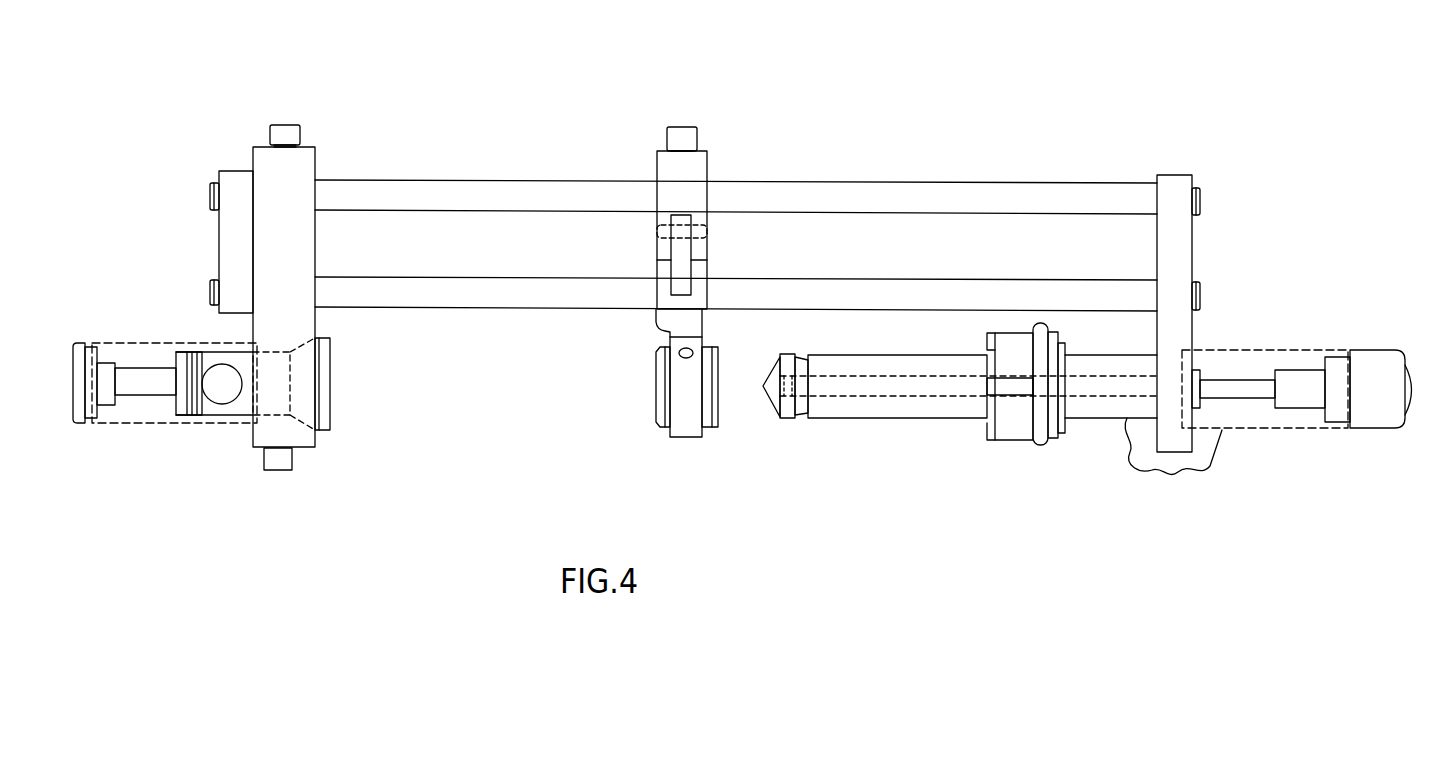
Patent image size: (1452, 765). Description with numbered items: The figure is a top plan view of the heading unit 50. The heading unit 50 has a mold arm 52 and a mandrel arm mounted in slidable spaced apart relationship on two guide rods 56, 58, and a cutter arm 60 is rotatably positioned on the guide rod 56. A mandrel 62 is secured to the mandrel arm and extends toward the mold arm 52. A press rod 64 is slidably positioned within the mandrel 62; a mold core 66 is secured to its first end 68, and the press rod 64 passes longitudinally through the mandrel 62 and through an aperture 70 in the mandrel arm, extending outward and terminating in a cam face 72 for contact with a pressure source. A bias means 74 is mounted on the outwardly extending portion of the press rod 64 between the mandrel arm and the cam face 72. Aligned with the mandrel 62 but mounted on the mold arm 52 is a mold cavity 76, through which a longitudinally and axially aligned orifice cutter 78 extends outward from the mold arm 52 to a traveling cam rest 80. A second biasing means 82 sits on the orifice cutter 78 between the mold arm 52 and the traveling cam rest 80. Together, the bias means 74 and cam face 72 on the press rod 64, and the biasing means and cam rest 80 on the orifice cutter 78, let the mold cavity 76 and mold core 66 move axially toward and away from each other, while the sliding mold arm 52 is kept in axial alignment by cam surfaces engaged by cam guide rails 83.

The heading unit 50 is at (495, 136).
The mold arm 52 is at (258, 160).
The guide rod 56 is at (385, 192).
The guide rod 58 is at (415, 296).
The cutter arm 60 is at (697, 170).
The mandrel 62 is at (947, 413).
The press rod 64 is at (872, 388).
The mold core 66 is at (775, 397).
The first end 68 is at (790, 398).
The aperture 70 is at (1192, 372).
The cam face 72 is at (1375, 418).
The bias means 74 is at (1283, 360).
The mold cavity 76 is at (275, 405).
The orifice cutter 78 is at (146, 390).
The traveling cam rest 80 is at (80, 416).
The second biasing means 82 is at (147, 352).
The cam guide rails 83 is at (290, 128).